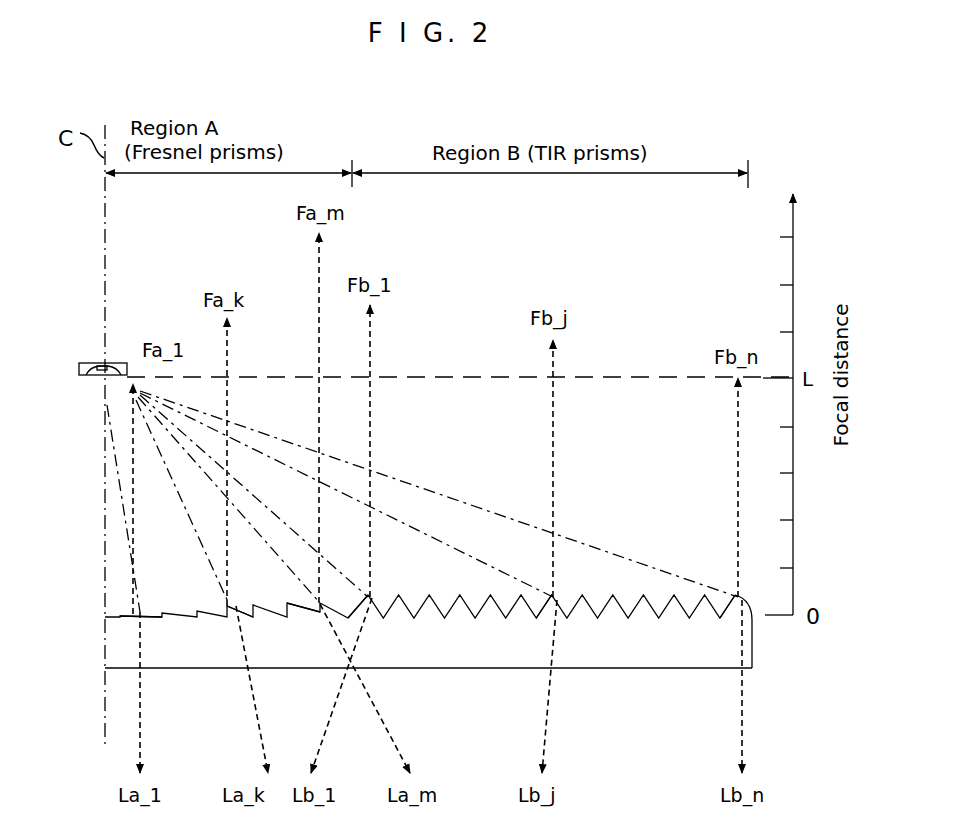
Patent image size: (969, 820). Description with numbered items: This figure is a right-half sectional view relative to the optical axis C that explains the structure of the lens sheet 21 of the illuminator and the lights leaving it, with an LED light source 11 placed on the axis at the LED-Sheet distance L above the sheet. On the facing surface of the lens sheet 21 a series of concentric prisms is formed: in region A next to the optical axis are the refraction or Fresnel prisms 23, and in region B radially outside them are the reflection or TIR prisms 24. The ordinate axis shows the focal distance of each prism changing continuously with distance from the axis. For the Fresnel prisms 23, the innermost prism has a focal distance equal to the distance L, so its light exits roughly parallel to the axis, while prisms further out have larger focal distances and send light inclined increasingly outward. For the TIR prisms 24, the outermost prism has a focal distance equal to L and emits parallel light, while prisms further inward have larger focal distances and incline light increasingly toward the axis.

The light source (LED) 11 is at (96, 359).
The lens sheet 21 is at (633, 680).
The Fresnel prisms 23 is at (263, 607).
The TIR prisms 24 is at (612, 603).